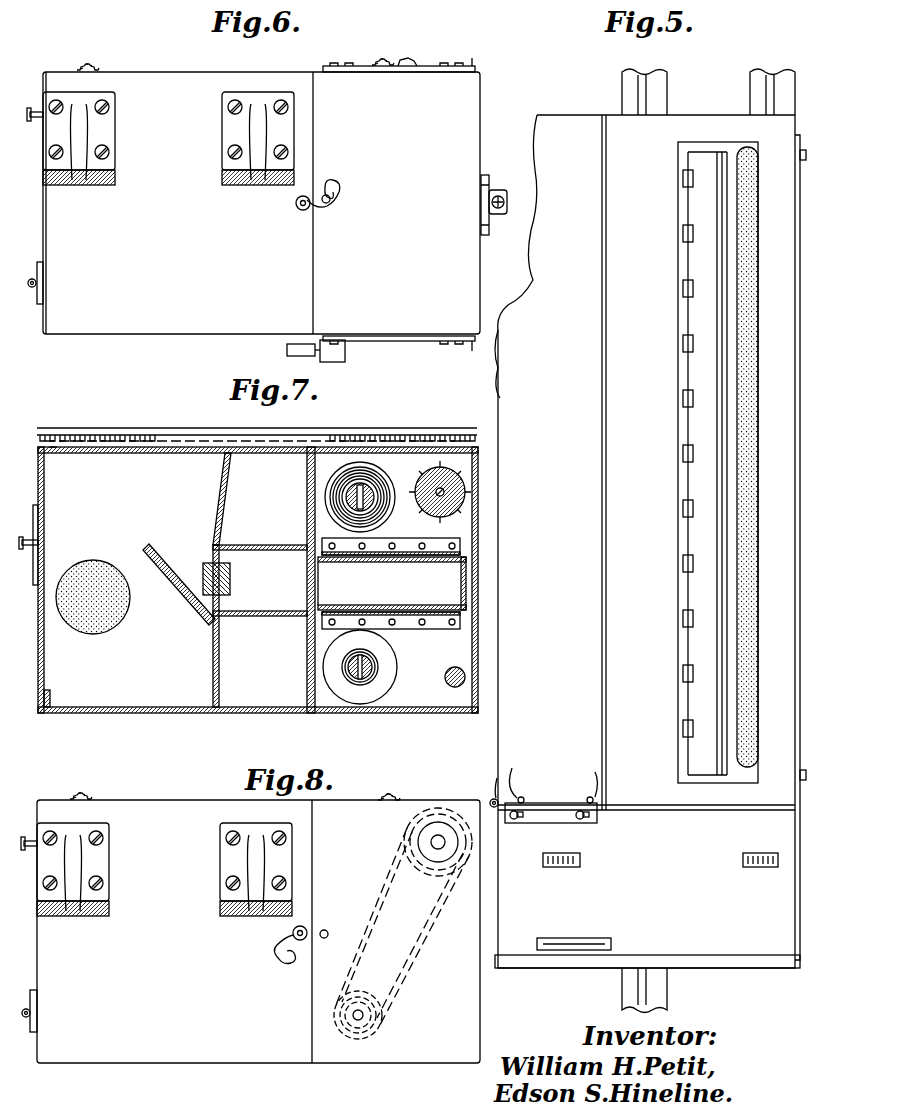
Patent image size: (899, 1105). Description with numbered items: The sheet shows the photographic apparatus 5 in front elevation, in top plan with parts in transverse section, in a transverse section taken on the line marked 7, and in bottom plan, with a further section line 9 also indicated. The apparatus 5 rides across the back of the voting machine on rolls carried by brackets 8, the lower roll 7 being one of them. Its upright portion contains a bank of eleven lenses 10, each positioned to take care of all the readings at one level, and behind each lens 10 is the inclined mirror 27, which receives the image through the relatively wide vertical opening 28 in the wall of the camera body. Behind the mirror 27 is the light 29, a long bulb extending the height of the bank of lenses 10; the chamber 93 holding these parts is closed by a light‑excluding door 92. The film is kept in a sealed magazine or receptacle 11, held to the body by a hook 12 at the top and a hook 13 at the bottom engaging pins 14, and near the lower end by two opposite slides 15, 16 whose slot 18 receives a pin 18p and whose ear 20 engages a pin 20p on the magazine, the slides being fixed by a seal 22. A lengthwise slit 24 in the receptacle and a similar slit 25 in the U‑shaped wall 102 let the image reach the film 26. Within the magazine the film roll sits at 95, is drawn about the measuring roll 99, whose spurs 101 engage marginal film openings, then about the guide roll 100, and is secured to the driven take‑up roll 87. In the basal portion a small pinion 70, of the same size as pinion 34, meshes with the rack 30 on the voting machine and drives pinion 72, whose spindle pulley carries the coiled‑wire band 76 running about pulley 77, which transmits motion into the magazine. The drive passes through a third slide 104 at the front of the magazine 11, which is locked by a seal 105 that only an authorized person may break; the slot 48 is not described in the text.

In FIG. 6, the photographic apparatus 5 is at (235, 344).
In FIG. 7, the photographic apparatus 5 is at (194, 724).
In FIG. 8, the photographic apparatus 5 is at (90, 1068).
In FIG. 5, the photographic apparatus 5 is at (800, 565).
In FIG. 6, the brackets 8 is at (84, 172).
In FIG. 8, the brackets 8 is at (76, 903).
In FIG. 5, the brackets 8 is at (622, 84).
In FIG. 7, the lenses 10 is at (232, 578).
In FIG. 5, the lenses 10 is at (670, 160).
In FIG. 6, the magazine or sealed receptacle 11 is at (486, 88).
In FIG. 7, the magazine or sealed receptacle 11 is at (432, 726).
In FIG. 8, the magazine or sealed receptacle 11 is at (424, 1072).
In FIG. 6, the hook 12 is at (301, 211).
In FIG. 8, the hook 13 is at (283, 952).
In FIG. 6, the pins 14 is at (336, 197).
In FIG. 8, the pins 14 is at (327, 930).
In FIG. 6, the slide 15 is at (415, 341).
In FIG. 5, the slide 16 is at (553, 812).
In FIG. 5, the slot 18 is at (514, 822).
In FIG. 5, the pin 18p is at (540, 808).
In FIG. 5, the ear 20 is at (521, 797).
In FIG. 5, the pin 20p is at (615, 795).
In FIG. 6, the seal 22 is at (287, 350).
In FIG. 7, the lengthwise slit 24 is at (320, 585).
In FIG. 7, the slit 25 is at (406, 662).
In FIG. 7, the film 26 is at (470, 633).
In FIG. 7, the inclined mirror 27 is at (172, 594).
In FIG. 5, the inclined mirror 27 is at (706, 485).
In FIG. 7, the vertical opening 28 is at (168, 455).
In FIG. 5, the vertical opening 28 is at (737, 286).
In FIG. 7, the light 29 is at (96, 622).
In FIG. 5, the light 29 is at (745, 560).
In FIG. 7, the rack 30 is at (215, 433).
In FIG. 6, the pinion 34 is at (90, 64).
In FIG. 7, the pinion 34 is at (85, 440).
In FIG. 8, the pinion 34 is at (80, 794).
In FIG. 5, the pinion 34 is at (760, 867).
In FIG. 6, the slot 48 is at (410, 62).
In FIG. 5, the slot 48 is at (570, 942).
In FIG. 6, the pinion 70 is at (383, 62).
In FIG. 7, the pinion 70 is at (392, 437).
In FIG. 8, the pinion 70 is at (388, 796).
In FIG. 5, the pinion 70 is at (562, 867).
In FIG. 8, the pinion 72 is at (445, 808).
In FIG. 8, the driving band or belt 76 is at (398, 981).
In FIG. 8, the pulley 77 is at (380, 1028).
In FIG. 7, the take-up roll 87 is at (330, 667).
In FIG. 6, the door 92 is at (44, 236).
In FIG. 7, the door 92 is at (44, 543).
In FIG. 5, the door 92 is at (797, 353).
In FIG. 7, the chamber 93 is at (93, 494).
In FIG. 7, the film roll 95 is at (348, 497).
In FIG. 7, the measuring roll 99 is at (441, 468).
In FIG. 7, the guide roll 100 is at (448, 685).
In FIG. 7, the spurs 101 is at (432, 508).
In FIG. 7, the wall 102 is at (335, 625).
In FIG. 5, the third slide 104 is at (497, 780).
In FIG. 6, the seal 105 is at (500, 183).
In FIG. 5, the lower roll 7 is at (811, 420).
In FIG. 7, the section line 9- 9 is at (312, 580).